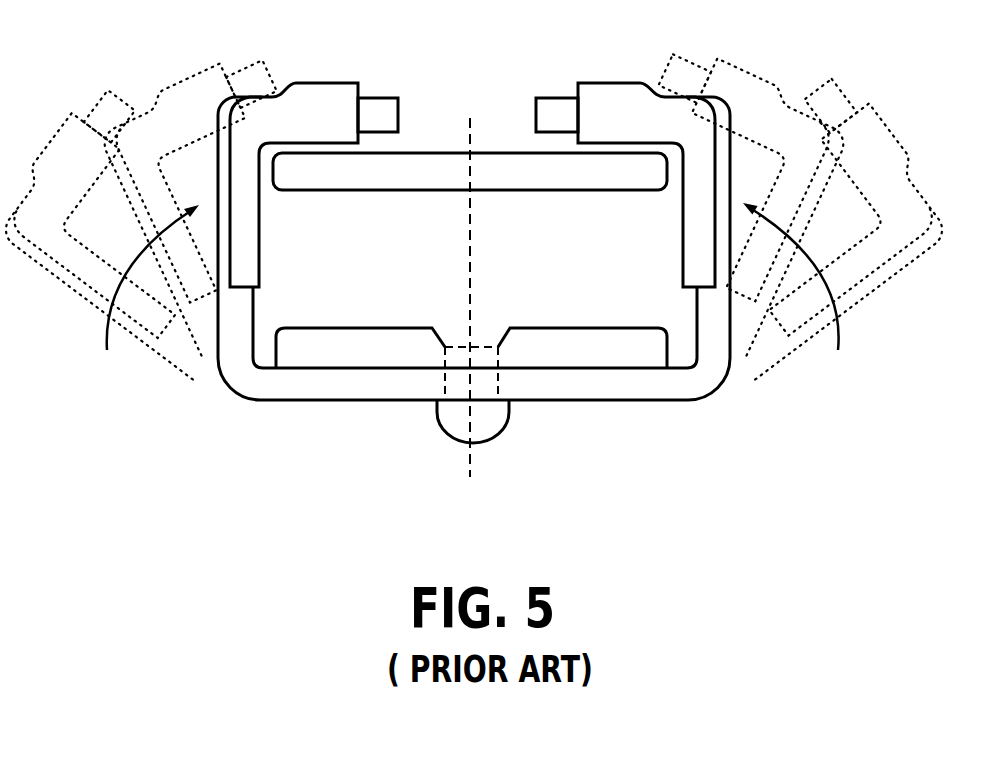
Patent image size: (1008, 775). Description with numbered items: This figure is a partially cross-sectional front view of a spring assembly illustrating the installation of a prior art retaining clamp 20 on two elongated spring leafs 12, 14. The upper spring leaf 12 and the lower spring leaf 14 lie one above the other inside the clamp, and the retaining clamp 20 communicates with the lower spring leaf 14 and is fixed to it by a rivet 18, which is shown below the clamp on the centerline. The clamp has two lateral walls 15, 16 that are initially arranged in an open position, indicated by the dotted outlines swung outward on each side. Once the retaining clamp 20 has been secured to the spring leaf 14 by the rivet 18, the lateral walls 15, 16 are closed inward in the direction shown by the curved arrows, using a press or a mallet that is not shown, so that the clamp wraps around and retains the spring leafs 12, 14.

The elongated spring leaf 12 is at (373, 170).
The elongated spring leaf 14 is at (360, 350).
The lateral wall 15 is at (227, 323).
The lateral wall 16 is at (712, 327).
The rivet 18 is at (485, 417).
The retaining clamp 20 is at (480, 277).